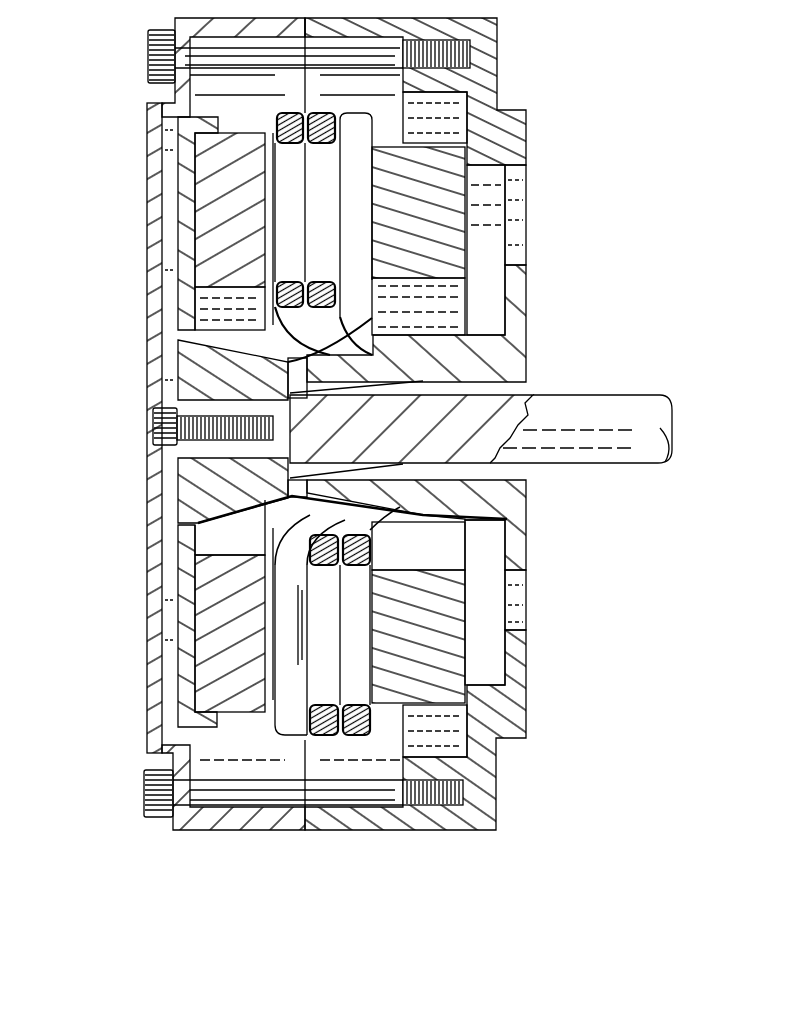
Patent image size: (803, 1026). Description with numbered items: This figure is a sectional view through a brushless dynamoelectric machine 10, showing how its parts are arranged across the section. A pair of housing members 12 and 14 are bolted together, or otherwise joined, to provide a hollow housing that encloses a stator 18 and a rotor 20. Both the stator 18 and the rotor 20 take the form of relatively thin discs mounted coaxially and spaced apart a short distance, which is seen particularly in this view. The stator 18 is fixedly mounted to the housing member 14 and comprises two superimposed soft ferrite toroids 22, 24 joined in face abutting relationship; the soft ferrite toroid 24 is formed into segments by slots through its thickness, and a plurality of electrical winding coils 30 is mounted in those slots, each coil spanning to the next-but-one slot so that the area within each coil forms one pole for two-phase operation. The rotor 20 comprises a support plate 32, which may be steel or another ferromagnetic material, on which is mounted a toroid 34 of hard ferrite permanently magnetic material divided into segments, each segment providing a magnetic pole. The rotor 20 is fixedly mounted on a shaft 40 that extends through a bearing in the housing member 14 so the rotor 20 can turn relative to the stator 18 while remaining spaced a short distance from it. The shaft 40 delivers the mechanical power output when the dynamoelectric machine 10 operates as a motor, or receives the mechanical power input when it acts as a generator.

The brushless dynamoelectric machine 10 is at (80, 45).
The housing member 12 is at (147, 123).
The housing member 14 is at (526, 137).
The stator 18 is at (478, 245).
The rotor 20 is at (172, 205).
The soft ferrite toroid 22 is at (457, 550).
The soft ferrite toroid 24 is at (370, 513).
The electrical winding coils 30 is at (332, 690).
The support plate 32 is at (175, 665).
The toroid 34 is at (218, 563).
The shaft 40 is at (608, 440).